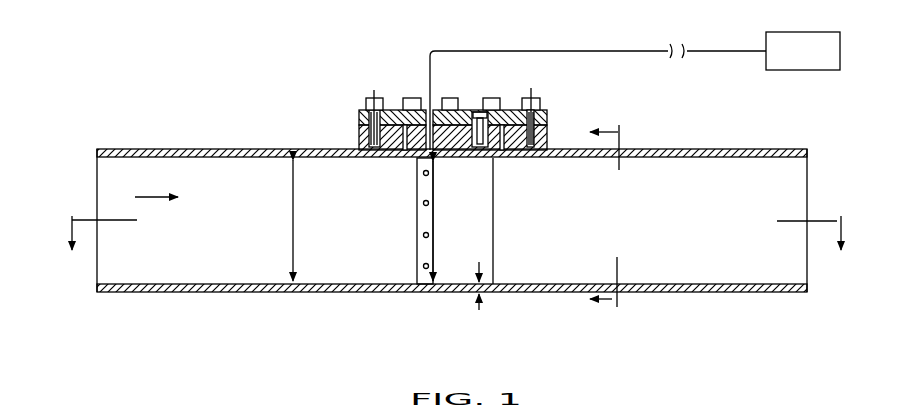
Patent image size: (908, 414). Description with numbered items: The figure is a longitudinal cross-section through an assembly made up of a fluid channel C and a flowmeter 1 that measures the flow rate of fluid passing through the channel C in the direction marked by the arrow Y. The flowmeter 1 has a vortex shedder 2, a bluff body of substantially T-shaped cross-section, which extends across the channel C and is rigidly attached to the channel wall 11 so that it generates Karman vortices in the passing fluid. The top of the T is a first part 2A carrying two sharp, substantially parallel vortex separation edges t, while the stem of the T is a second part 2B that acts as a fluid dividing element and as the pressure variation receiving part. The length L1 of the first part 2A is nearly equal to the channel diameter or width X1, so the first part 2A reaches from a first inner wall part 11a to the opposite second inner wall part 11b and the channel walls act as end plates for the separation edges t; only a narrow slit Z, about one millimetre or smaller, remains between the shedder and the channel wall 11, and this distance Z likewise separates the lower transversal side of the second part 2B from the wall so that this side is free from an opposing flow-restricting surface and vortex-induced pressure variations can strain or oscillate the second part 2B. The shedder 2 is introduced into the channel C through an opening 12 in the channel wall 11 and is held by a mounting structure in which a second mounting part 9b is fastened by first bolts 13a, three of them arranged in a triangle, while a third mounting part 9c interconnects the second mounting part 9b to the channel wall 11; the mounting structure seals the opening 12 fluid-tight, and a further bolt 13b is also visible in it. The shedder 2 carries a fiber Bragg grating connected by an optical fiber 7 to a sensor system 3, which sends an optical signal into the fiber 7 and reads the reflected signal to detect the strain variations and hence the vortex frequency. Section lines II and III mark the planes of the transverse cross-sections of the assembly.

The flowmeter 1 is at (370, 67).
The vortex shedder 2 is at (409, 201).
The first part 2A is at (423, 292).
The second part 2B is at (488, 243).
The sensor system 3 is at (803, 51).
The optical fiber 7 is at (600, 51).
The second mounting part 9b is at (360, 108).
The third mounting part 9c is at (360, 135).
The channel wall 11 is at (452, 201).
The first inner wall part 11a is at (325, 158).
The second inner wall part 11b is at (347, 284).
The opening 12 is at (495, 158).
The first bolts 13a is at (480, 111).
The bolt 13b is at (533, 110).
The flow channel diameter/width X1 is at (293, 210).
The length of the first shedder body part L1 is at (434, 266).
The slit Z is at (480, 305).
The vortex separation edges t is at (413, 253).
The arrow indicating fluid flow direction Y is at (156, 187).
The fluid channel C is at (139, 251).
The section II- II is at (604, 223).
The section III- III is at (447, 233).